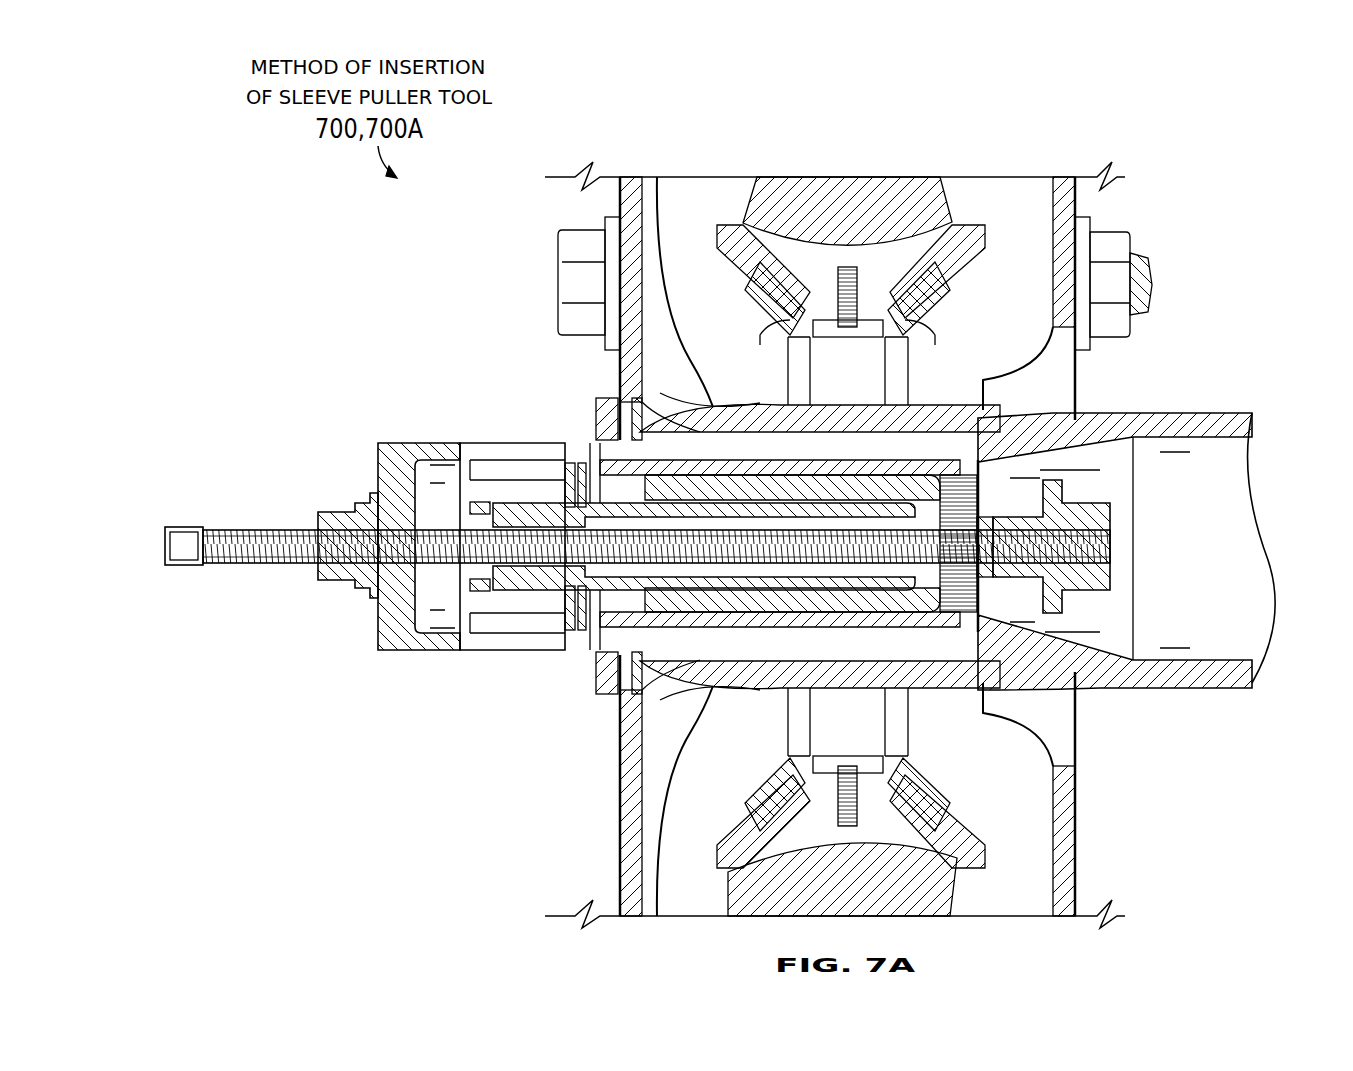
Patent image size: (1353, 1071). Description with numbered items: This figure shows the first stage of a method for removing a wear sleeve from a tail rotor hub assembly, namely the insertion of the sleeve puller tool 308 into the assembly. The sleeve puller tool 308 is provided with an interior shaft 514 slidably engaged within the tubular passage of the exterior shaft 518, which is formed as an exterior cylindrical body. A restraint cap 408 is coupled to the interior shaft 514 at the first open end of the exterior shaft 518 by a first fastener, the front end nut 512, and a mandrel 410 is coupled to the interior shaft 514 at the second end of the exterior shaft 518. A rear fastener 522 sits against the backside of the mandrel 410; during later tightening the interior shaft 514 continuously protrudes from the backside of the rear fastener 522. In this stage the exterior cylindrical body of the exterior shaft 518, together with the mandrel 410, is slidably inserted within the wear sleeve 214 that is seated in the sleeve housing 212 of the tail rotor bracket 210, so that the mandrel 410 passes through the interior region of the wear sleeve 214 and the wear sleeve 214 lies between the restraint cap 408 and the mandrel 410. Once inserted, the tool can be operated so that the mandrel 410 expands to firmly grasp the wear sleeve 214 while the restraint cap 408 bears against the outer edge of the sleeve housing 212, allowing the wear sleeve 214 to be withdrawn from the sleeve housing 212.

The tail rotor bracket 210 is at (1048, 798).
The sleeve housing 212 is at (1216, 412).
The wear sleeve 214 is at (660, 290).
The sleeve puller tool 308 is at (482, 420).
The restraint cap 408 is at (412, 652).
The mandrel 410 is at (1063, 600).
The front end nut 512 is at (340, 512).
The interior shaft 514 is at (190, 527).
The exterior shaft 518 is at (540, 592).
The rear fastener 522 is at (1098, 486).